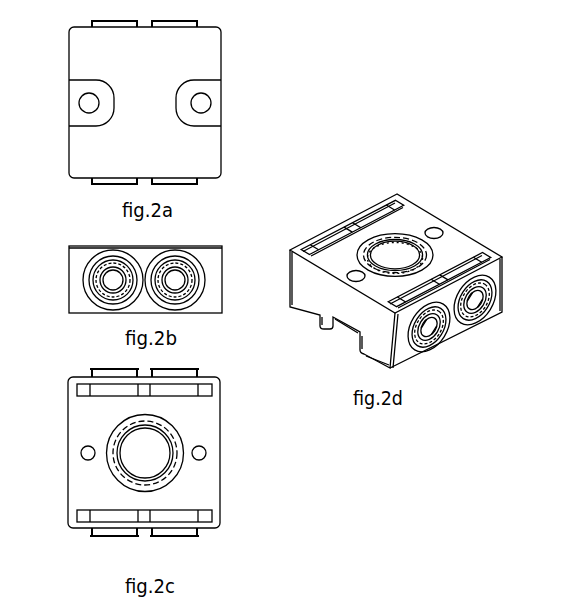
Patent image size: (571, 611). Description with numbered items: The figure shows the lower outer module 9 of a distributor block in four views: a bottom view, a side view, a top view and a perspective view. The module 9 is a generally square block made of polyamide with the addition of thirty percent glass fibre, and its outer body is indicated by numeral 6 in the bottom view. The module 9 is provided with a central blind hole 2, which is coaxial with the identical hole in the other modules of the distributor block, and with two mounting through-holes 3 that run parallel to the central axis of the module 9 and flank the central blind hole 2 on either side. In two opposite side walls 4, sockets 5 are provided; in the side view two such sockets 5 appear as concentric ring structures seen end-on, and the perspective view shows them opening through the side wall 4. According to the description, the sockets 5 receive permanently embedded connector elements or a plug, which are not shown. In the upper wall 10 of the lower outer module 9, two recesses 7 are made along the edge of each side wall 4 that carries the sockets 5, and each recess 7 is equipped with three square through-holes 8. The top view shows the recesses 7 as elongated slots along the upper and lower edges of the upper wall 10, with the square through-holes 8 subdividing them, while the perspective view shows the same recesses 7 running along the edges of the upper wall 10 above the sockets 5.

In FIG. 2C, the central blind hole 2 is at (163, 462).
In FIG. 2C, the mounting through-holes 3 is at (106, 445).
In FIG. 2B, the side walls 4 is at (218, 257).
In FIG. 2D, the sockets 5 is at (412, 345).
In FIG. 2A, the housing 6 is at (198, 62).
In FIG. 2C, the recesses 7 is at (111, 407).
In FIG. 2C, the square through-holes 8 is at (192, 518).
In FIG. 2D, the lower outer module 9 is at (385, 225).
In FIG. 2C, the upper wall 10 is at (213, 496).